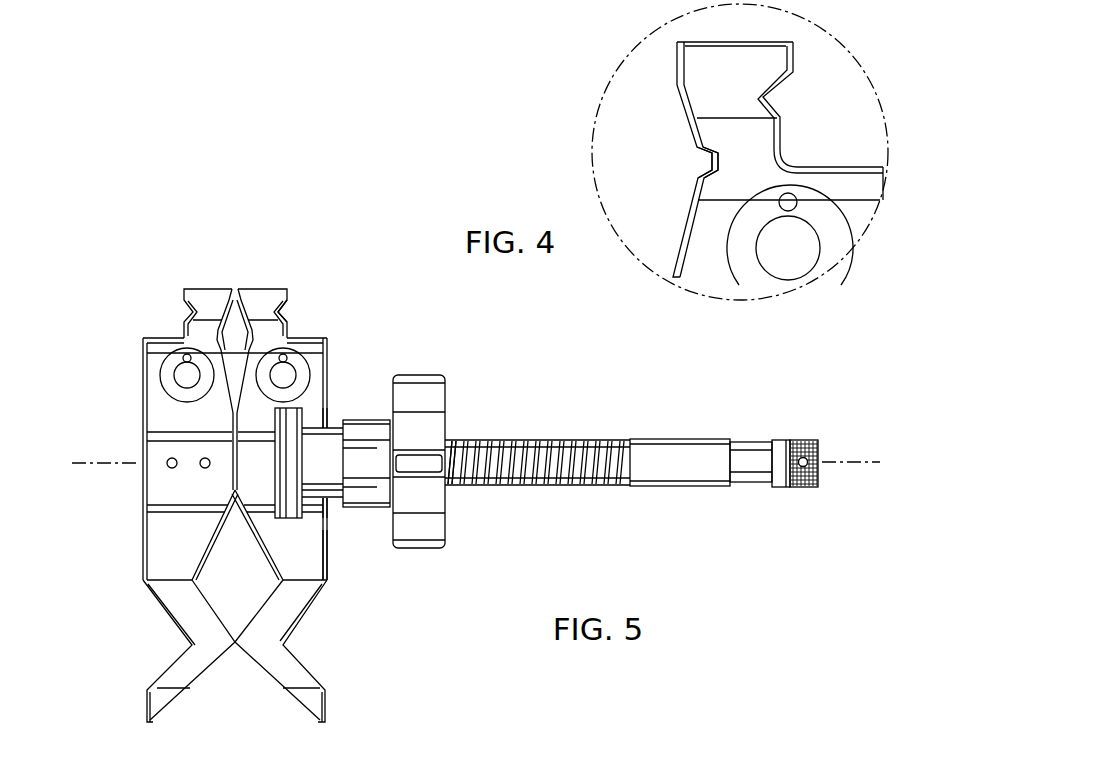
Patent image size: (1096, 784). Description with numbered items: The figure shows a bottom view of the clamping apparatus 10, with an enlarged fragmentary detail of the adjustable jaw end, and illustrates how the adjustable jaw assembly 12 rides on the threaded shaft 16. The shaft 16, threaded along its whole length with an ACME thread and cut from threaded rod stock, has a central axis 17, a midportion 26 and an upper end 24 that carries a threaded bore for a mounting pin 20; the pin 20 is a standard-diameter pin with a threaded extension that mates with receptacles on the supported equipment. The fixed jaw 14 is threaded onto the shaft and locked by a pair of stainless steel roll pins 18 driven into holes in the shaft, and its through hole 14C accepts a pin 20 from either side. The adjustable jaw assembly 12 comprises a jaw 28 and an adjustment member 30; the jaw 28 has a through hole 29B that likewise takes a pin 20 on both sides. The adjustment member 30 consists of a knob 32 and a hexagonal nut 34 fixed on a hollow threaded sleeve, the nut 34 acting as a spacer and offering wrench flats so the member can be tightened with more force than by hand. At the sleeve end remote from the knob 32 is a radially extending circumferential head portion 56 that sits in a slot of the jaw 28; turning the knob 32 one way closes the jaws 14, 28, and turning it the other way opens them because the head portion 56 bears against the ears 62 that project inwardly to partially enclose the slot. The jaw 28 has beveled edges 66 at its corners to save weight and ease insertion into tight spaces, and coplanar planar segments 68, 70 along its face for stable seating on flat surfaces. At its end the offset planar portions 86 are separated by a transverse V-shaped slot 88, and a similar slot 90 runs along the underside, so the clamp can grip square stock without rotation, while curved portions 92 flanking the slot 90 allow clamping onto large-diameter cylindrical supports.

In FIG. 5, the clamping apparatus 10 is at (93, 412).
In FIG. 5, the adjustable jaw assembly 12 is at (380, 636).
In FIG. 5, the fixed jaw 14 is at (167, 617).
In FIG. 5, the threaded hole 14C is at (184, 372).
In FIG. 5, the threaded shaft 16 is at (509, 485).
In FIG. 5, the central axis 17 is at (846, 460).
In FIG. 5, the roll pins 18 is at (203, 466).
In FIG. 5, the mounting pin 20 is at (702, 428).
In FIG. 5, the upper end 24 is at (613, 438).
In FIG. 5, the midportion 26 is at (453, 440).
In FIG. 5, the jaw 28 is at (287, 688).
In FIG. 5, the hole 29B is at (279, 372).
In FIG. 5, the adjustment member 30 is at (423, 562).
In FIG. 5, the knob 32 is at (418, 376).
In FIG. 5, the hexagonal nut 34 is at (346, 420).
In FIG. 5, the circumferential head portion 56 is at (306, 405).
In FIG. 5, the ears 62 is at (329, 412).
In FIG. 5, the beveled edges 66 is at (162, 705).
In FIG. 5, the planar segment 68 is at (329, 708).
In FIG. 5, the planar segment 70 is at (329, 566).
In FIG. 5, the offset planar portion 86 is at (310, 322).
In FIG. 4, the V-shaped slot 88 is at (769, 96).
In FIG. 5, the V-shaped slot 88 is at (291, 312).
In FIG. 4, the V-shaped slot 90 is at (705, 160).
In FIG. 4, the curved portions 92 is at (681, 97).